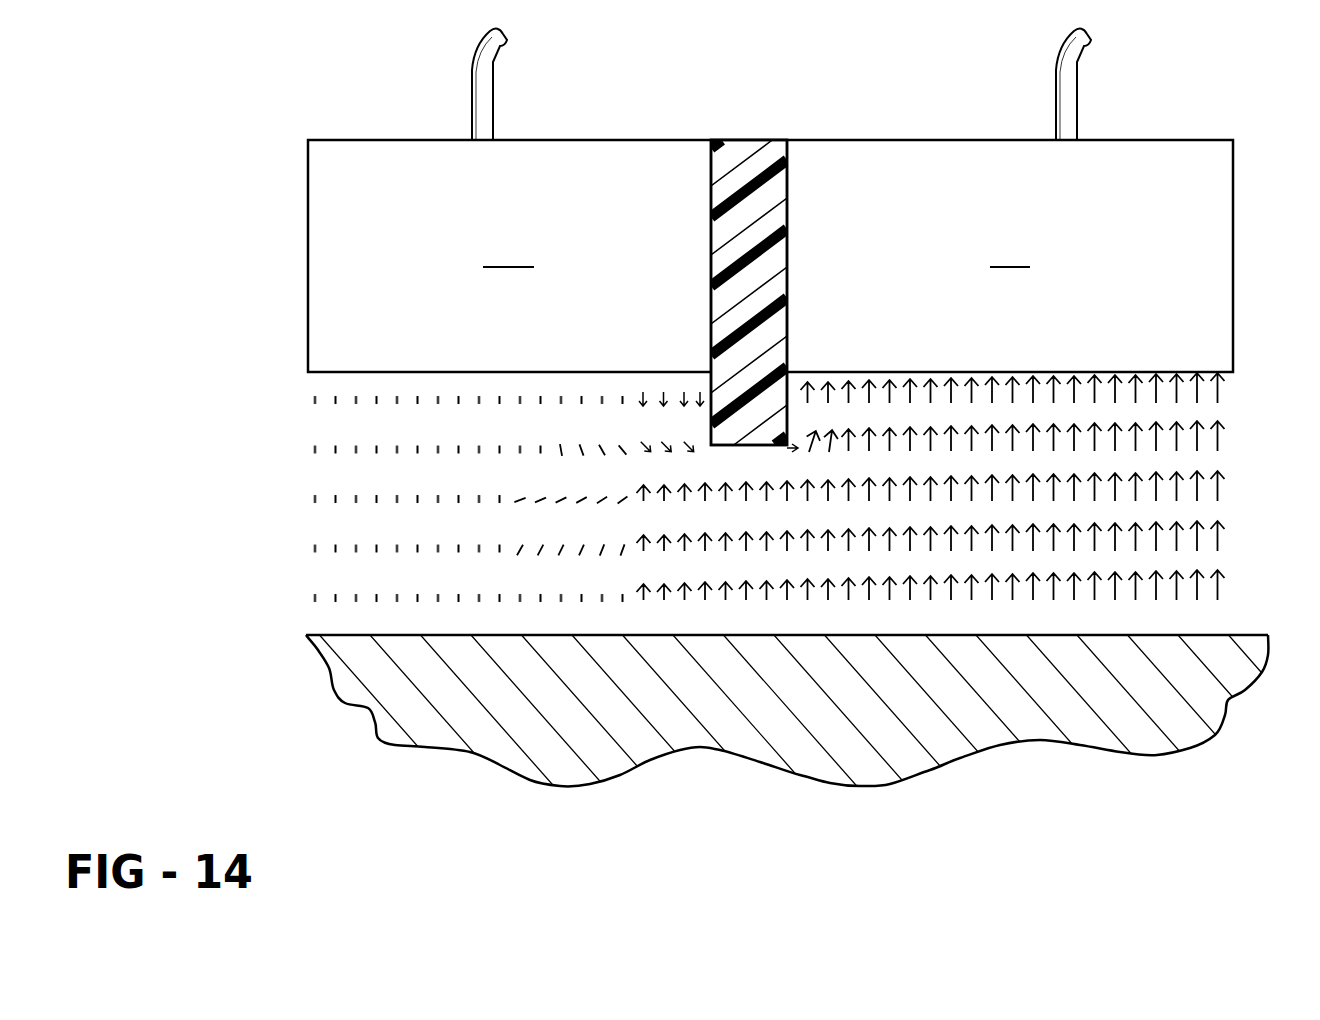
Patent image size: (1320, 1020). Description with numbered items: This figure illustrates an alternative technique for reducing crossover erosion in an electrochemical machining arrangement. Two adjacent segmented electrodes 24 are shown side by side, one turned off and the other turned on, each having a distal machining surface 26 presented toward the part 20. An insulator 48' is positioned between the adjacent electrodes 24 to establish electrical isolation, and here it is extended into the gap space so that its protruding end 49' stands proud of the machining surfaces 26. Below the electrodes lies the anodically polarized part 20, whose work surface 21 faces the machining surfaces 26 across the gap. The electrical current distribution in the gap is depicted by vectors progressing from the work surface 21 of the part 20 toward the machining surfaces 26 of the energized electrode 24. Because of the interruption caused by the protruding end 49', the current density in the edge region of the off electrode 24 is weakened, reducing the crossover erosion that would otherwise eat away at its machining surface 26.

The electrode 24 is at (350, 138).
The insulator 48' is at (749, 260).
The protruding end 49' is at (699, 397).
The machining surface 26 is at (352, 372).
The work surface 21 is at (1197, 634).
The part 20 is at (597, 795).